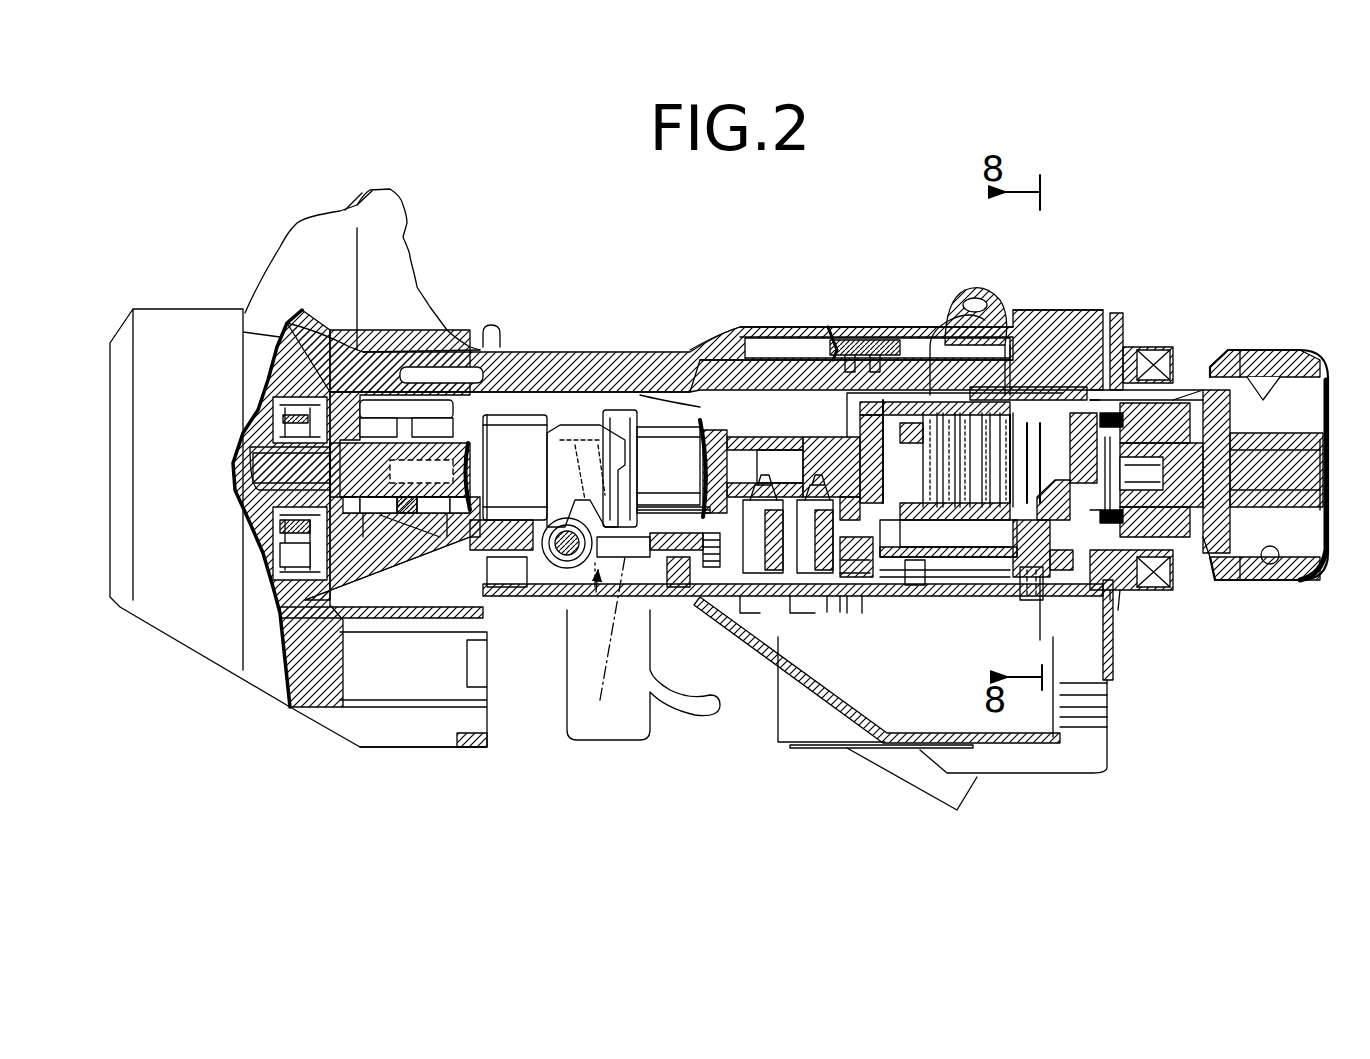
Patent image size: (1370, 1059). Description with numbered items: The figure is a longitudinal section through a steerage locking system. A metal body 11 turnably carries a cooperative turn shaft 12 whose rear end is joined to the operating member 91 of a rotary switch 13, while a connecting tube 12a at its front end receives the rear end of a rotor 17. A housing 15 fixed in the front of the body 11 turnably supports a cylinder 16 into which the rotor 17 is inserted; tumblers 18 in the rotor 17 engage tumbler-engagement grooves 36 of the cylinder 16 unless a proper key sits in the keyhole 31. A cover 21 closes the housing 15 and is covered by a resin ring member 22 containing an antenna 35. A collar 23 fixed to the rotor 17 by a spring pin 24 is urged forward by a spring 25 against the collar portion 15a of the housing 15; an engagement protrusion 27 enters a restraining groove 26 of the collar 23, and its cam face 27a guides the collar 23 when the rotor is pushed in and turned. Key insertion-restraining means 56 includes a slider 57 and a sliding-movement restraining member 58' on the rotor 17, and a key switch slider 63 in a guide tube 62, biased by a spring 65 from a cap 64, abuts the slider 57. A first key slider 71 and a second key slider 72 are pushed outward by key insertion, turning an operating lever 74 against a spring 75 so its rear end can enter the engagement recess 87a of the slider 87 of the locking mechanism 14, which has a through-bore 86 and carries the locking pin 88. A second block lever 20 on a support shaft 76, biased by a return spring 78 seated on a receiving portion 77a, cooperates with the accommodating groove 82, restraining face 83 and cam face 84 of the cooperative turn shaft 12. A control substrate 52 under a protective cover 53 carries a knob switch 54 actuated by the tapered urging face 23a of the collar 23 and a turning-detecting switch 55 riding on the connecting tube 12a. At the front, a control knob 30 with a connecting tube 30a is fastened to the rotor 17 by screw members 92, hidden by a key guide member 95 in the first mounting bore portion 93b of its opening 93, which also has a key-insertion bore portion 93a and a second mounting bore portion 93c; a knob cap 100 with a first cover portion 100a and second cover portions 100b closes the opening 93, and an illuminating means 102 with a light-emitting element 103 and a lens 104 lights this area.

The rotary switch 13 is at (233, 303).
The engagement recess 87a is at (383, 407).
The locking pin 88 is at (432, 453).
The operating member 91 is at (240, 495).
The through-bore 86 is at (390, 530).
The slider 87 is at (405, 530).
The cooperative turn shaft 12 is at (517, 425).
The connecting tube 12a is at (740, 350).
The body 11 is at (730, 360).
The operating lever 74 is at (650, 380).
The locking mechanism 14 is at (447, 547).
The cam face 84 is at (543, 440).
The accommodating groove 82 is at (568, 430).
The second block lever 20 is at (595, 440).
The restraining face 83 is at (617, 440).
The spring 25 is at (700, 468).
The collar 23 is at (840, 445).
The support shaft 76 is at (558, 568).
The return spring 78 is at (572, 610).
The receiving portion 77a is at (643, 648).
The control substrate 52 is at (827, 575).
The knob switch 54 is at (780, 570).
The turning-detecting switch 55 is at (712, 570).
The tapered urging face 23a is at (680, 555).
The spring pin 24 is at (845, 580).
The protective cover 53 is at (870, 700).
The cap 64 is at (1060, 690).
The key switch slider 63 is at (1052, 640).
The guide tube 62 is at (1050, 600).
The spring 65 is at (1018, 590).
The housing 15 is at (910, 560).
The collar portion 15a is at (886, 570).
The tumblers 18 is at (945, 560).
The slider 57 is at (975, 575).
The rotor 17 is at (920, 395).
The tumbler-engagement grooves 36 is at (935, 345).
The cylinder 16 is at (970, 345).
The keyhole 31 is at (1003, 345).
The pin 58' is at (1023, 304).
The key insertion-restraining means 56 is at (1075, 413).
The cover 21 is at (1068, 310).
The second key slider 72 is at (1090, 395).
The restraining groove 26 is at (834, 325).
The cam face 27a is at (832, 340).
The spring 75 is at (852, 355).
The engagement protrusion 27 is at (876, 355).
The antenna 35 is at (1140, 347).
The ring member 22 is at (1152, 347).
The screw members 92 is at (1168, 400).
The connecting tube 30a is at (1185, 398).
The first key slider 71 is at (1165, 588).
The lens 104 is at (1145, 592).
The illuminating means 102 is at (1120, 600).
The light-emitting element 103 is at (1127, 612).
The key guide member 95 is at (1215, 583).
The knob cap 100 is at (1310, 352).
The first cover portion 100a is at (1318, 580).
The second cover portions 100b is at (1242, 350).
The opening 93 is at (1265, 355).
The key-insertion bore portion 93a is at (1165, 487).
The first mounting bore portion 93b is at (1150, 432).
The second mounting bore portion 93c is at (1268, 583).
The control knob 30 is at (1240, 343).